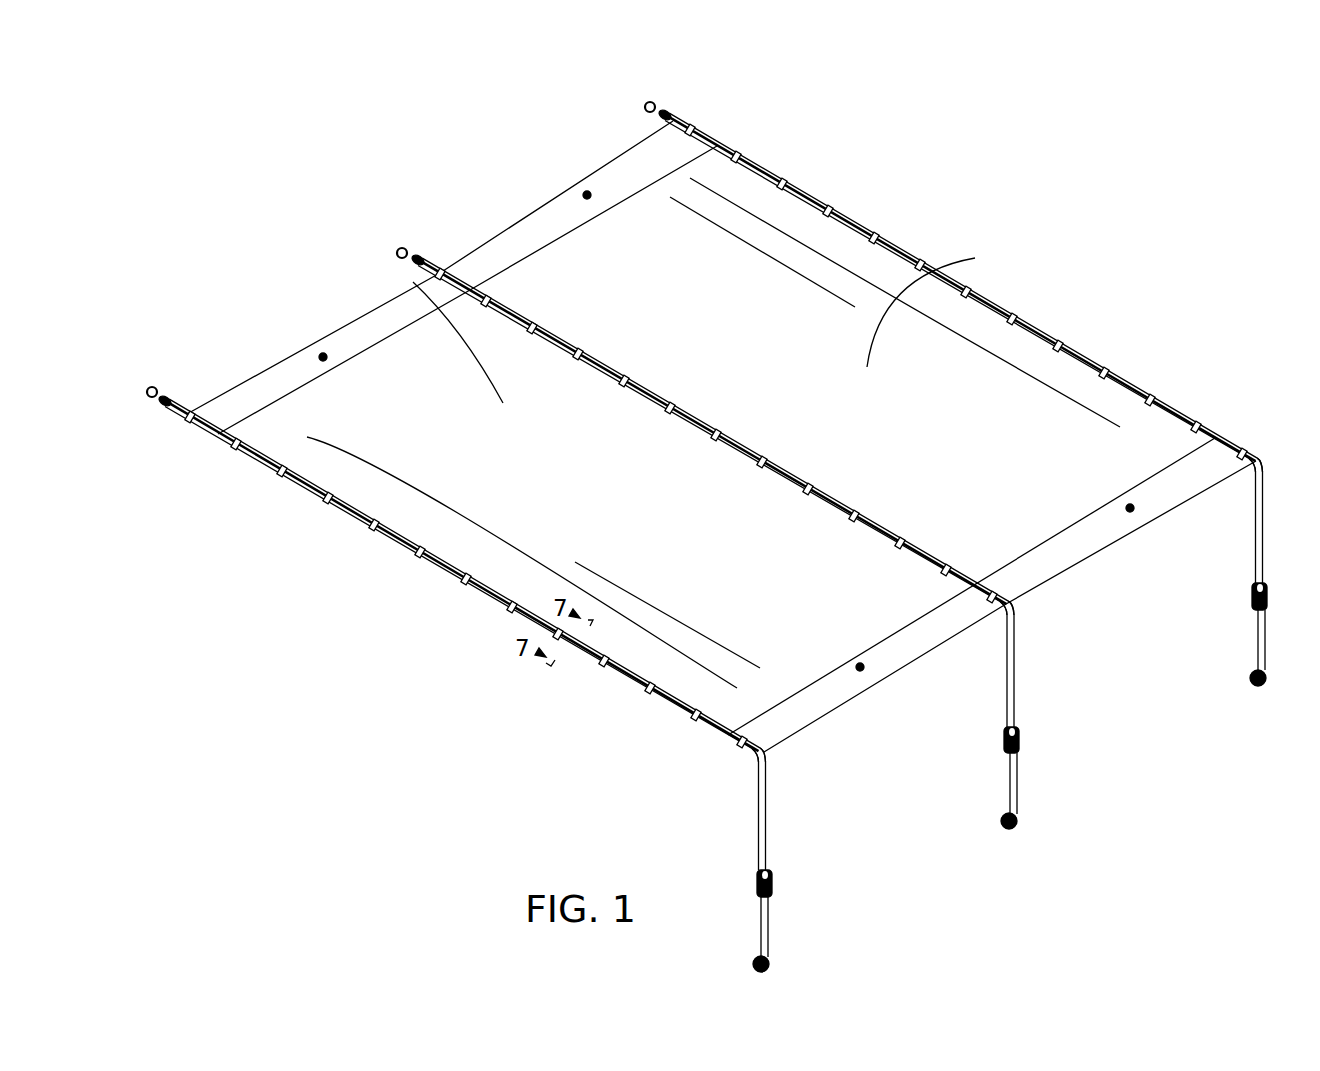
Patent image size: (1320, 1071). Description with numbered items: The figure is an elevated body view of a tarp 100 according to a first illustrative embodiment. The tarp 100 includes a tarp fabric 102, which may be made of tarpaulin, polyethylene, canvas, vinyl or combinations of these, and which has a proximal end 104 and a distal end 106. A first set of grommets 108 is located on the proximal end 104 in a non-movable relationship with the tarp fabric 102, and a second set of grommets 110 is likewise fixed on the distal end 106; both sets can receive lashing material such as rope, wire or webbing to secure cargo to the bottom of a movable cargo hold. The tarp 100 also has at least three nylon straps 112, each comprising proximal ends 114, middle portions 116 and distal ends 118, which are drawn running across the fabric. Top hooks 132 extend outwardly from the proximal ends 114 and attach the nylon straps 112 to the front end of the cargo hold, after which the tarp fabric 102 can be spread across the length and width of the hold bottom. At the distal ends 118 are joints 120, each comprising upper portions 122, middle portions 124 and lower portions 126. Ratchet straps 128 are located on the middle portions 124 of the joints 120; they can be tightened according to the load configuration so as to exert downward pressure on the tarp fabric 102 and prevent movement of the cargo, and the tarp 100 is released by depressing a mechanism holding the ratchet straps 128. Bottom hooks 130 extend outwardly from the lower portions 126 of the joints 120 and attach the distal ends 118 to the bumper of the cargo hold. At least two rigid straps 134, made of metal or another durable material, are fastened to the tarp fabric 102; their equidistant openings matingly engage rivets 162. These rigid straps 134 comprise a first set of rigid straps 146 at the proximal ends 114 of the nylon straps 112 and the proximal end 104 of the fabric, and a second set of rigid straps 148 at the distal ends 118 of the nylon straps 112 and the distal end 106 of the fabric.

The tarp 100 is at (953, 113).
The tarp fabric 102 is at (413, 282).
The proximal end 104 is at (347, 318).
The distal end 106 is at (926, 652).
The first set of grommets 108 is at (320, 354).
The second set of grommets 110 is at (857, 663).
The nylon straps 112 is at (982, 218).
The proximal ends 114 is at (188, 412).
The middle portions 116 is at (452, 574).
The distal ends 118 is at (795, 855).
The joints 120 is at (771, 755).
The upper portions 122 is at (767, 805).
The middle portions 124 is at (757, 849).
The lower portions 126 is at (771, 928).
The ratchet straps 128 is at (756, 882).
The bottom hooks 130 is at (752, 965).
The top hooks 132 is at (148, 398).
The rigid straps 134 is at (736, 160).
The first set of rigid straps 146 is at (820, 158).
The second set of rigid straps 148 is at (1182, 335).
The rivets 162 is at (826, 200).